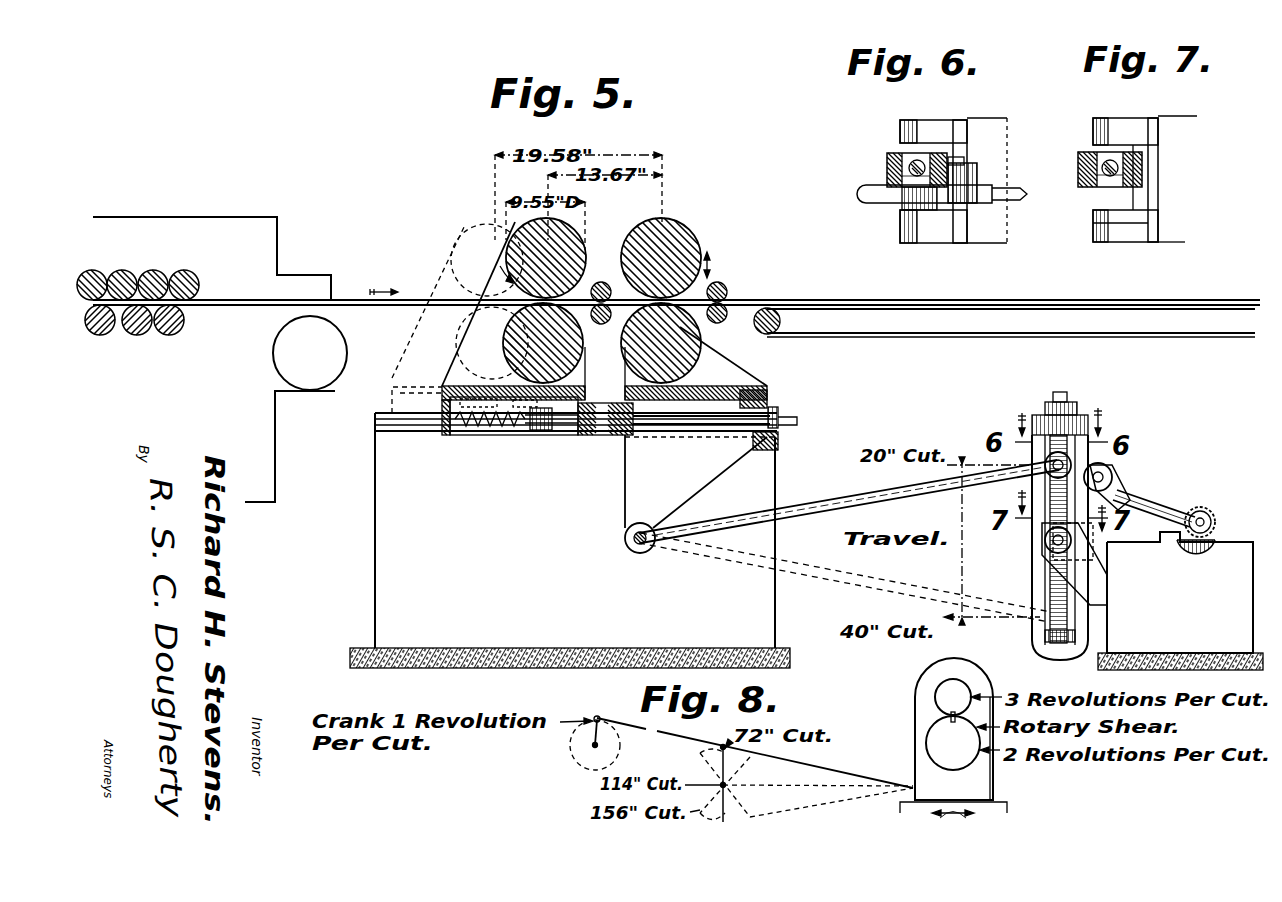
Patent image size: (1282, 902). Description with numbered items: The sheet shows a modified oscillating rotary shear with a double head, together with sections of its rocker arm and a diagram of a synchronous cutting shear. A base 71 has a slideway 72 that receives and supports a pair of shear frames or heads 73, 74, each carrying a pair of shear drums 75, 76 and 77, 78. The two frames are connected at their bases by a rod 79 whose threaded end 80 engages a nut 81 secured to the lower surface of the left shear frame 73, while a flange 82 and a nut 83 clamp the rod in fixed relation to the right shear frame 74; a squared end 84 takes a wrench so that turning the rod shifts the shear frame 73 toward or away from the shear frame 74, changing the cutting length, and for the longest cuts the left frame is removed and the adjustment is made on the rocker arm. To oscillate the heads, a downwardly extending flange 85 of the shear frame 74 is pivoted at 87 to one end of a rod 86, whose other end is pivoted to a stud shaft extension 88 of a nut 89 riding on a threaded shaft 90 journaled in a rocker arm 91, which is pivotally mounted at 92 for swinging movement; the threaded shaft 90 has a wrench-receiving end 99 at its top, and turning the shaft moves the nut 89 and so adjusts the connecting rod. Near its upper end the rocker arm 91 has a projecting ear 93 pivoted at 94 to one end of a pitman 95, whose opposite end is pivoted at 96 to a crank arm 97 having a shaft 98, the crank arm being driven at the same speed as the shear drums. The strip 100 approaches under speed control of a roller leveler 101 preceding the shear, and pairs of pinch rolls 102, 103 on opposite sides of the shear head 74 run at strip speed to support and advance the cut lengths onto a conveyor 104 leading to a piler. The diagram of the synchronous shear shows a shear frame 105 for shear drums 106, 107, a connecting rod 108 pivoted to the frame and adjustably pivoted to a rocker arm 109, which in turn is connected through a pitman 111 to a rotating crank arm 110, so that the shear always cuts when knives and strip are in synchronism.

In FIG. 5, the base 71 is at (382, 543).
In FIG. 5, the slideway 72 is at (437, 433).
In FIG. 5, the shear frame 73 is at (458, 375).
In FIG. 5, the shear frame 74 is at (680, 224).
In FIG. 5, the shear drum 75 is at (507, 263).
In FIG. 5, the shear drum 76 is at (506, 353).
In FIG. 5, the shear drum 77 is at (699, 244).
In FIG. 5, the shear drum 78 is at (700, 362).
In FIG. 5, the rod 79 is at (718, 424).
In FIG. 5, the threaded end 80 is at (465, 422).
In FIG. 5, the nut 81 is at (523, 431).
In FIG. 5, the flange 82 is at (603, 434).
In FIG. 5, the nut 83 is at (779, 410).
In FIG. 5, the squared end 84 is at (800, 421).
In FIG. 5, the flange 85 is at (627, 505).
In FIG. 5, the rod 86 is at (818, 516).
In FIG. 6, the rod 86 is at (870, 201).
In FIG. 5, the pivot 87 is at (627, 548).
In FIG. 5, the stud shaft extension 88 is at (1032, 418).
In FIG. 6, the stud shaft extension 88 is at (905, 208).
In FIG. 5, the nut 89 is at (1034, 488).
In FIG. 6, the nut 89 is at (893, 160).
In FIG. 5, the threaded shaft 90 is at (1050, 578).
In FIG. 6, the threaded shaft 90 is at (887, 168).
In FIG. 7, the threaded shaft 90 is at (1142, 166).
In FIG. 5, the rocker arm 91 is at (1040, 637).
In FIG. 6, the rocker arm 91 is at (887, 176).
In FIG. 7, the rocker arm 91 is at (1080, 156).
In FIG. 5, the pivot 92 is at (1050, 541).
In FIG. 6, the pivot 92 is at (918, 125).
In FIG. 7, the pivot 92 is at (1110, 122).
In FIG. 5, the projecting ear 93 is at (1110, 471).
In FIG. 6, the projecting ear 93 is at (978, 181).
In FIG. 5, the pivot 94 is at (1122, 479).
In FIG. 6, the pivot 94 is at (968, 165).
In FIG. 5, the pitman 95 is at (1190, 502).
In FIG. 6, the pitman 95 is at (1004, 201).
In FIG. 5, the pivot 96 is at (1207, 515).
In FIG. 5, the crank arm 97 is at (1214, 541).
In FIG. 5, the shaft 98 is at (1180, 548).
In FIG. 5, the adjusting nut 99 is at (1064, 392).
In FIG. 5, the strip 100 is at (403, 305).
In FIG. 5, the roller leveler 101 is at (175, 333).
In FIG. 5, the pinch rolls 102 is at (600, 317).
In FIG. 5, the pinch rolls 103 is at (728, 303).
In FIG. 5, the conveyor 104 is at (950, 310).
In FIG. 8, the shear frame 105 is at (993, 784).
In FIG. 8, the shear drum 106 is at (938, 690).
In FIG. 8, the shear drum 107 is at (926, 745).
In FIG. 8, the connecting rod 108 is at (808, 765).
In FIG. 8, the rocker arm 109 is at (722, 767).
In FIG. 8, the crank arm 110 is at (593, 745).
In FIG. 8, the pitman 111 is at (627, 722).